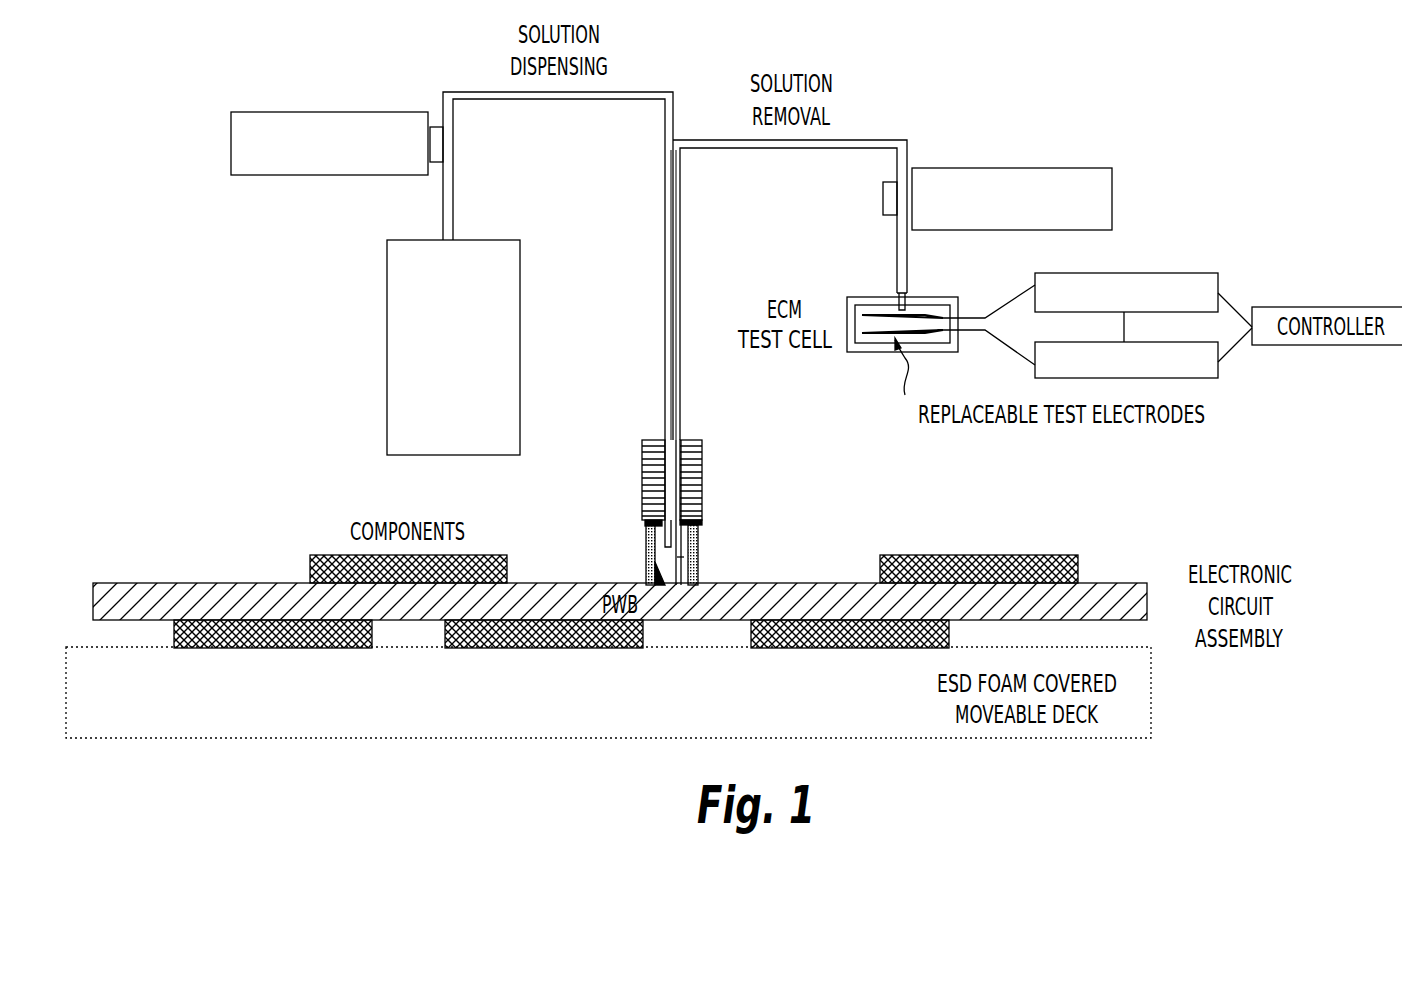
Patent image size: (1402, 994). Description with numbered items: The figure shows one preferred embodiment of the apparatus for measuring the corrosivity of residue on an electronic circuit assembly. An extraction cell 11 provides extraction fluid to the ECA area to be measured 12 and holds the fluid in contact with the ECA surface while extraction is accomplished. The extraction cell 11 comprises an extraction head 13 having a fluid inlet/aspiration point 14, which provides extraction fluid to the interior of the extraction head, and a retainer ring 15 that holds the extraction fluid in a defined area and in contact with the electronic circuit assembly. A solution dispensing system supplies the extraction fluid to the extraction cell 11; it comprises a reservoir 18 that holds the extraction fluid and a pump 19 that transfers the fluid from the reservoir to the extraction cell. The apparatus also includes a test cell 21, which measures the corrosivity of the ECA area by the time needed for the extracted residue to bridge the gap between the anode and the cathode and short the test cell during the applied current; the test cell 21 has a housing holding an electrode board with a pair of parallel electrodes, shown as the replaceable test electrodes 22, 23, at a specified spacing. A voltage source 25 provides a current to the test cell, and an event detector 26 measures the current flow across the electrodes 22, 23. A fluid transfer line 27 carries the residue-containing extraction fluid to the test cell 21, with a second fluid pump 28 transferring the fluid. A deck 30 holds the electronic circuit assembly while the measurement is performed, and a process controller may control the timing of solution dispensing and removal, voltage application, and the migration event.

The extraction cell 11 is at (633, 441).
The ECA area to be measured 12 is at (650, 562).
The extraction head 13 is at (708, 531).
The fluid inlet/aspiration point 14 is at (648, 527).
The retainer ring 15 is at (646, 535).
The reservoir 18 is at (387, 333).
The pump 19 is at (231, 160).
The test cell 21 is at (840, 308).
The test electrode 22 is at (875, 315).
The test electrode 23 is at (870, 338).
The voltage source 25 is at (1218, 273).
The event detector 26 is at (1218, 378).
The fluid transfer line 27 is at (684, 557).
The second fluid pump 28 is at (993, 168).
The deck 30 is at (1151, 687).